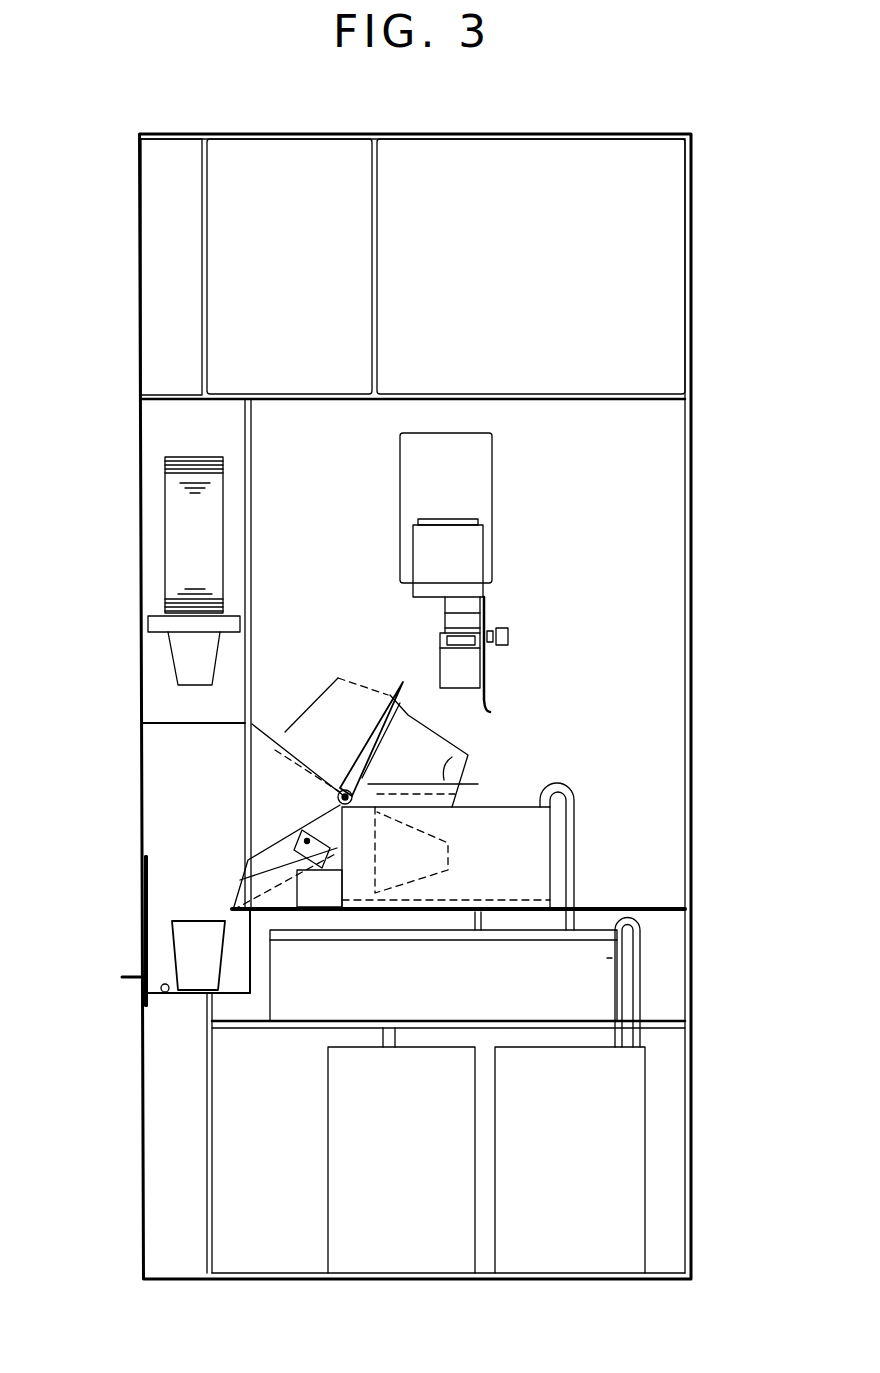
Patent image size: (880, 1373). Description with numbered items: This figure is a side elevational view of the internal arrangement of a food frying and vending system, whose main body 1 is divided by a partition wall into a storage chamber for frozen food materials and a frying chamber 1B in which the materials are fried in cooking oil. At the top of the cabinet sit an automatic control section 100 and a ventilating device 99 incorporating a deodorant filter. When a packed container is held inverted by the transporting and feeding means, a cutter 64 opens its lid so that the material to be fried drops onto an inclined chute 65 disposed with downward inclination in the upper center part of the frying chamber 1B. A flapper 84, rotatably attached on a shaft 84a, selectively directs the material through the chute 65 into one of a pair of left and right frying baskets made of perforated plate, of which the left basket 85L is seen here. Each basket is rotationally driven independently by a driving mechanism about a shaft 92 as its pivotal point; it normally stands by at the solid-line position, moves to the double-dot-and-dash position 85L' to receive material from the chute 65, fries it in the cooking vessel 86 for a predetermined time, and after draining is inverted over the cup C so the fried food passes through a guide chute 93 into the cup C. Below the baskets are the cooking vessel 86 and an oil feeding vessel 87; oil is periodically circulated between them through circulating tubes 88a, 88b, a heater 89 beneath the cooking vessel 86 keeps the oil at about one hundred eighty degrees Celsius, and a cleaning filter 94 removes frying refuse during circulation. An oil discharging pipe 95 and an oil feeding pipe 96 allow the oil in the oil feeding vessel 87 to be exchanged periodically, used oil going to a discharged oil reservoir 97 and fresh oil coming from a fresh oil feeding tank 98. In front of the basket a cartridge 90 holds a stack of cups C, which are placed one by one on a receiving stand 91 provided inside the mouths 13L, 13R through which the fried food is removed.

The main body 1 is at (692, 319).
The frying chamber 1B is at (672, 574).
The automatic control section 100 is at (290, 160).
The ventilating device 99 is at (536, 160).
The cutter 64 is at (455, 518).
The inclined chute 65 is at (480, 600).
The flapper 84 is at (452, 658).
The shaft 84a is at (440, 632).
The left basket 85L is at (371, 711).
The basket receiving position 85L' is at (463, 751).
The shaft 92 is at (338, 800).
The guide chute 93 is at (247, 863).
The cooking vessel 86 is at (510, 818).
The heater 89 is at (457, 900).
The circulating tube 88a is at (570, 875).
The circulating tube 88b is at (473, 920).
The cleaning filter 94 is at (527, 937).
The oil feeding vessel 87 is at (607, 958).
The oil feeding pipe 96 is at (635, 978).
The oil discharging pipe 95 is at (380, 1050).
The discharged oil reservoir 97 is at (338, 1160).
The fresh oil feeding tank 98 is at (640, 1152).
The cartridge 90 is at (180, 540).
The cup C is at (180, 660).
The left mouth 13L is at (143, 882).
The right mouth 13R is at (88, 931).
The receiving stand 91 is at (165, 992).